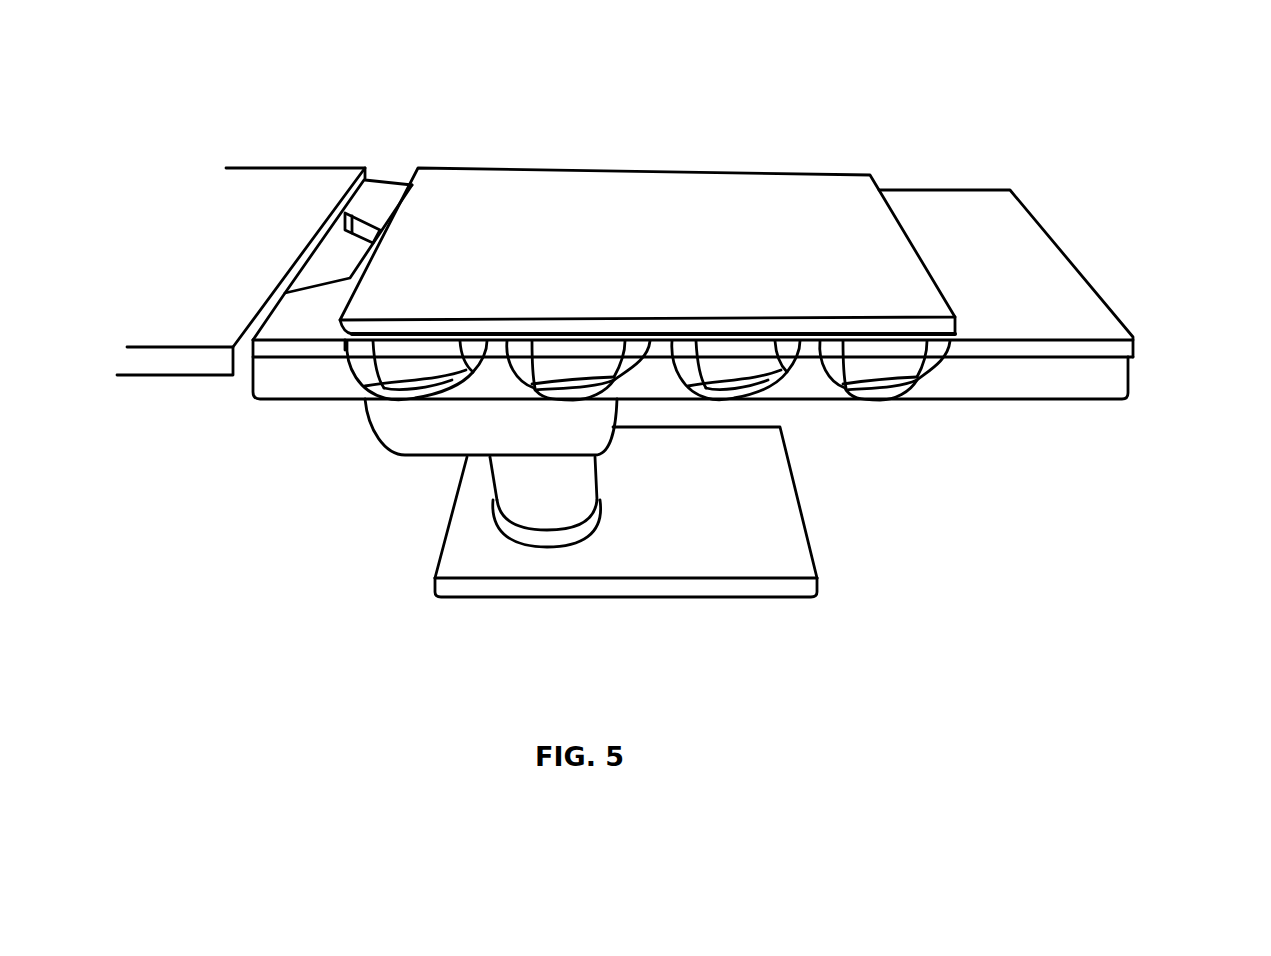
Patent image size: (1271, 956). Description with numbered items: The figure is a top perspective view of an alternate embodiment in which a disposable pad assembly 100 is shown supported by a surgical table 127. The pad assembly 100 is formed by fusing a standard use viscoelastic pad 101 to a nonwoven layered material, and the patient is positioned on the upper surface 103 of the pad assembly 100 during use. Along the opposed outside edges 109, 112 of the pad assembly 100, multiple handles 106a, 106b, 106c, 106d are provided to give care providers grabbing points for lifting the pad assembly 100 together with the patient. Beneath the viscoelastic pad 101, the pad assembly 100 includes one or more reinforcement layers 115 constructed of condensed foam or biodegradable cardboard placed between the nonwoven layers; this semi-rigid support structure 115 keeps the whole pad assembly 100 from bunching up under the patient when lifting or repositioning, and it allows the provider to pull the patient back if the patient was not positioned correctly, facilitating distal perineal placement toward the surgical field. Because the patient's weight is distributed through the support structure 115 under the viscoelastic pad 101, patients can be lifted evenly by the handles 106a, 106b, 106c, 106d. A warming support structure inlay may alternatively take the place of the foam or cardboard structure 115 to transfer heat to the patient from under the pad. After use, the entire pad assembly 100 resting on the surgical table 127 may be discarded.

The pad assembly 100 is at (782, 148).
The viscoelastic pad 101 is at (533, 208).
The surface 103 is at (693, 261).
The handle 106a is at (357, 357).
The handle 106b is at (557, 382).
The handle 106c is at (762, 380).
The handle 106d is at (873, 387).
The outside edge 109 is at (990, 318).
The outside edge 112 is at (492, 157).
The reinforcement layer 115 is at (932, 325).
The surgical table 127 is at (1077, 370).